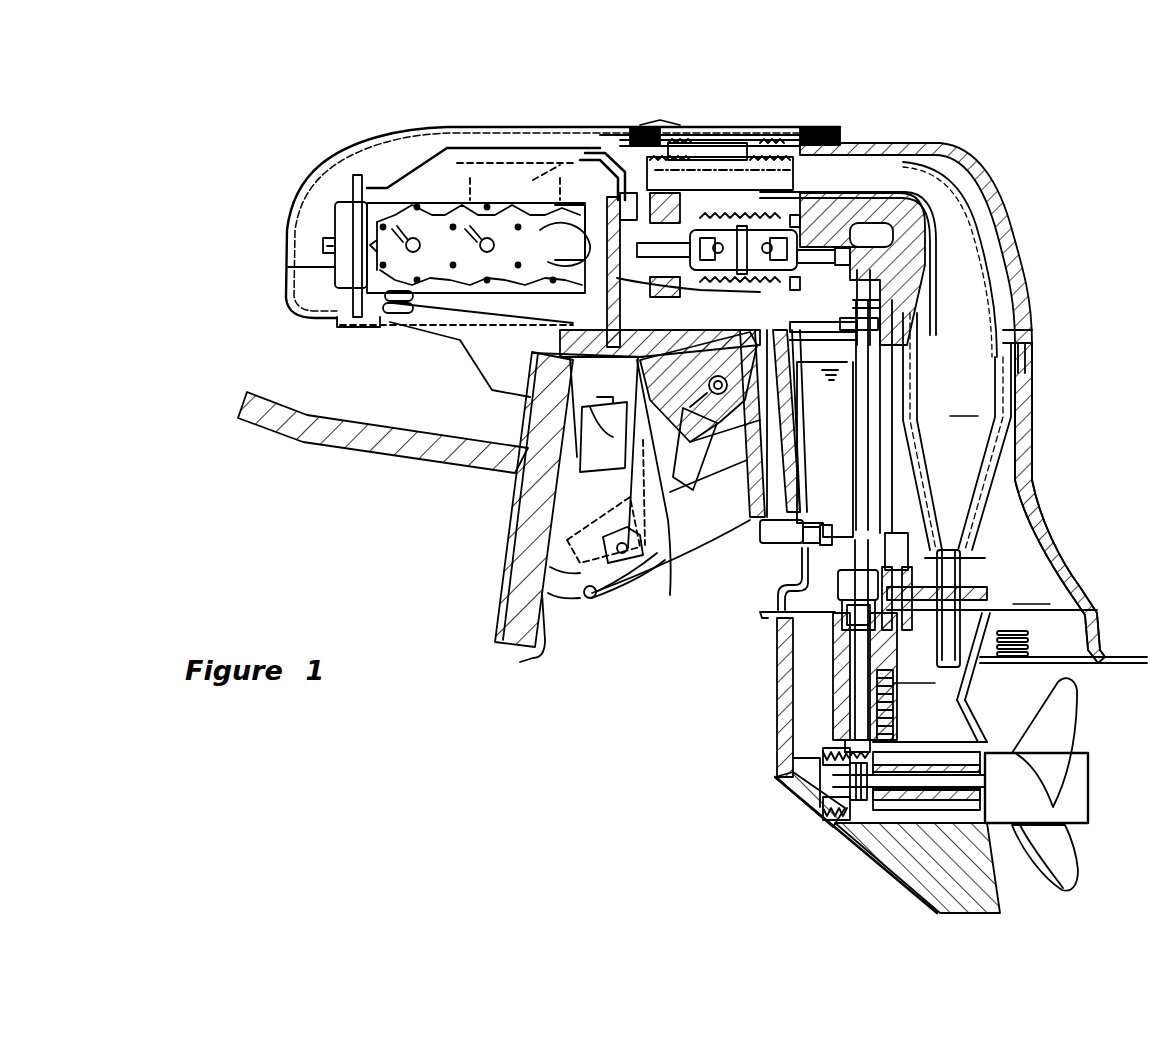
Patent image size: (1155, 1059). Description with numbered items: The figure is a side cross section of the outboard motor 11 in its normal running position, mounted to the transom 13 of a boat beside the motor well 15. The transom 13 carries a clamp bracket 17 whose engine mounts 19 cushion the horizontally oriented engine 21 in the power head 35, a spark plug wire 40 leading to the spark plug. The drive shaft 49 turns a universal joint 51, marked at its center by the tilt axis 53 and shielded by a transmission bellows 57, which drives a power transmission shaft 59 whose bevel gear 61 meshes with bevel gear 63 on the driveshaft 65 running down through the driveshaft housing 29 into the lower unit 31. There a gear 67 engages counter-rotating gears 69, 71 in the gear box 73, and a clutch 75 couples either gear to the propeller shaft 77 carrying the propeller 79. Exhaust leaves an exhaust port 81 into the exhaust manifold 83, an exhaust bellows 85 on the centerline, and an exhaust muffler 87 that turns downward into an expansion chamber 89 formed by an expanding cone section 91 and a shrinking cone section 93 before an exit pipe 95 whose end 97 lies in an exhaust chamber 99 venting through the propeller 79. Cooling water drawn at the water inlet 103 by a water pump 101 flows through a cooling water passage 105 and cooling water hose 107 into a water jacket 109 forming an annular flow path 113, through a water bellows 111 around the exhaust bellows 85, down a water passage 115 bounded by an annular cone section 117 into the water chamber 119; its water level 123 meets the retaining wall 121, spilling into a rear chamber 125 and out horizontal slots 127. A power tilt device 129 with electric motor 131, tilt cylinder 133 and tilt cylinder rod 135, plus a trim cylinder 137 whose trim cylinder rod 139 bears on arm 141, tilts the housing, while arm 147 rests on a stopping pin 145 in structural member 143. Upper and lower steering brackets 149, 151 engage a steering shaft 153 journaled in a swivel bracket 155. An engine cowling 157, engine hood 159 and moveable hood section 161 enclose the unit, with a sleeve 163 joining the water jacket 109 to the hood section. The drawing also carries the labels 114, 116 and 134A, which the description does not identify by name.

The outboard motor 11 is at (278, 172).
The transom 13 is at (532, 420).
The motor well 15 is at (270, 395).
The clamp bracket 17 is at (445, 345).
The engine mounts 19 is at (560, 270).
The engine 21 is at (395, 195).
The driveshaft housing 29 is at (1035, 440).
The lower unit 31 is at (1092, 640).
The power head 35 is at (450, 125).
The spark plug wire 40 is at (468, 244).
The drive shaft 49 is at (678, 200).
The universal joint 51 is at (712, 228).
The tilt axis 53 is at (755, 215).
The transmission bellows 57 is at (706, 392).
The power transmission shaft 59 is at (828, 210).
The bevel gear 61 is at (923, 190).
The bevel gear 63 is at (912, 262).
The driveshaft 65 is at (830, 460).
The gear 67 is at (845, 745).
The counter-rotating gear 69 is at (820, 800).
The counter-rotating gear 71 is at (862, 825).
The gear box 73 is at (828, 835).
The clutch 75 is at (847, 815).
The propeller shaft 77 is at (935, 785).
The propeller 79 is at (1075, 698).
The exhaust port 81 is at (550, 235).
The exhaust manifold 83 is at (595, 140).
The exhaust bellows 85 is at (672, 143).
The exhaust muffler 87 is at (1030, 305).
The expansion chamber 89 is at (920, 445).
The expanding cone section 91 is at (968, 205).
The shrinking cone section 93 is at (985, 510).
The exit pipe 95 is at (1010, 615).
The end 97 is at (975, 690).
The exhaust chamber 99 is at (893, 705).
The water pump 101 is at (760, 548).
The water inlet 103 is at (975, 705).
The cooling water passage 105 is at (915, 420).
The cooling water hose 107 is at (640, 290).
The water jacket 109 is at (600, 135).
The water bellows 111 is at (745, 143).
The annular flow path 113 is at (605, 145).
The mount plate 114 is at (395, 330).
The water passage 115 is at (1002, 238).
The tilt rod 116 is at (733, 540).
The annular cone section 117 is at (932, 480).
The water chamber 119 is at (950, 572).
The retaining wall 121 is at (1015, 455).
The water level 123 is at (905, 325).
The rear chamber 125 is at (1030, 512).
The horizontal slots 127 is at (1010, 650).
The power tilt device 129 is at (540, 498).
The electric motor 131 is at (588, 400).
The tilt cylinder 133 is at (640, 470).
The shaft connection 134A is at (905, 310).
The tilt cylinder rod 135 is at (625, 482).
The trim cylinder 137 is at (670, 565).
The trim cylinder rod 139 is at (700, 520).
The arm 141 is at (785, 455).
The structural member 143 is at (525, 655).
The stopping pin 145 is at (555, 603).
The arm 147 is at (600, 598).
The upper steering bracket 149 is at (830, 375).
The lower steering bracket 151 is at (808, 508).
The steering shaft 153 is at (790, 400).
The swivel bracket 155 is at (710, 472).
The engine cowling 157 is at (286, 287).
The engine hood 159 is at (325, 185).
The moveable hood section 161 is at (810, 125).
The sleeve 163 is at (640, 125).